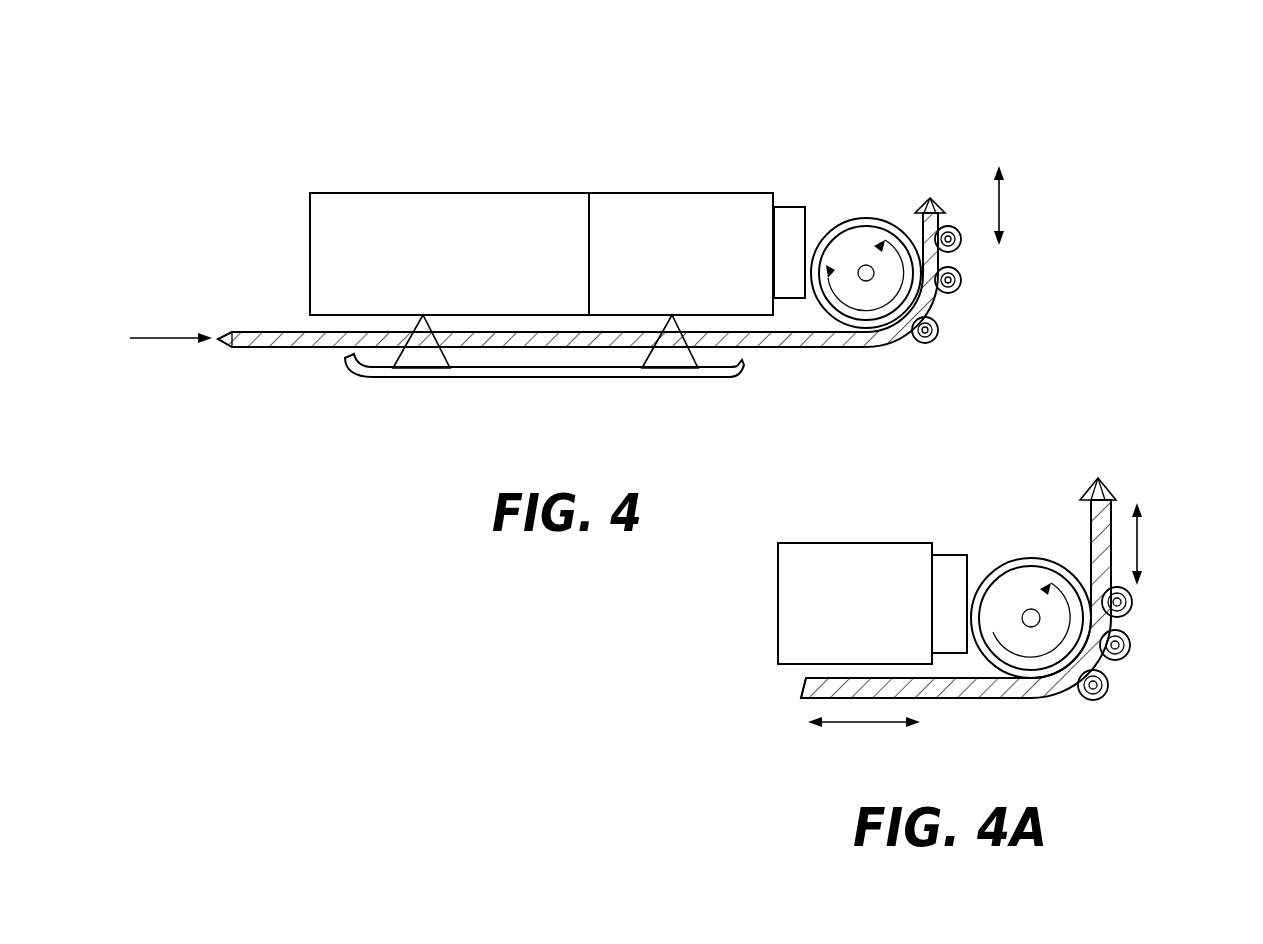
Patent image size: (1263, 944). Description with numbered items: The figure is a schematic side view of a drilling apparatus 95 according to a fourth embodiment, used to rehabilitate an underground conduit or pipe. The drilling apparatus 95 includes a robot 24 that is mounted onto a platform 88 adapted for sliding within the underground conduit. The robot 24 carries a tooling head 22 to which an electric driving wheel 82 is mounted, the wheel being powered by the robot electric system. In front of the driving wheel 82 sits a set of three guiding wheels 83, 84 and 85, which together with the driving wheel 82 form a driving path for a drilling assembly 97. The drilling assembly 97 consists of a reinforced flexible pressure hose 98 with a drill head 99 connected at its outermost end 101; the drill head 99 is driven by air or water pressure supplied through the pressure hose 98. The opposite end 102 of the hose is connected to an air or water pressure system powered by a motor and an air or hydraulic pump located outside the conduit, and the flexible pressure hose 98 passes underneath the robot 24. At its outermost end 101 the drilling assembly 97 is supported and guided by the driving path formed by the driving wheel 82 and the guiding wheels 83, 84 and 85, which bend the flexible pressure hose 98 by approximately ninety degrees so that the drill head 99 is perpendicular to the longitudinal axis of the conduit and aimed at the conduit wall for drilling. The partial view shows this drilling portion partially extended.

In FIG. 4, the tooling head 22 is at (790, 212).
In FIG. 4A, the tooling head 22 is at (955, 578).
In FIG. 4, the robot 24 is at (522, 205).
In FIG. 4A, the robot 24 is at (866, 568).
In FIG. 4, the electric driving wheel 82 is at (865, 218).
In FIG. 4A, the electric driving wheel 82 is at (1030, 557).
In FIG. 4, the guiding wheel 83 is at (962, 242).
In FIG. 4A, the guiding wheel 83 is at (1133, 608).
In FIG. 4, the guiding wheel 84 is at (962, 283).
In FIG. 4A, the guiding wheel 84 is at (1132, 648).
In FIG. 4, the guiding wheel 85 is at (938, 338).
In FIG. 4A, the guiding wheel 85 is at (1108, 692).
In FIG. 4, the platform 88 is at (540, 372).
In FIG. 4, the drilling apparatus 95 is at (818, 106).
In FIG. 4, the drilling assembly 97 is at (803, 350).
In FIG. 4A, the drilling assembly 97 is at (1010, 700).
In FIG. 4, the reinforced flexible pressure hose 98 is at (325, 347).
In FIG. 4A, the reinforced flexible pressure hose 98 is at (803, 688).
In FIG. 4, the drill head 99 is at (933, 200).
In FIG. 4A, the drill head 99 is at (1102, 480).
In FIG. 4, the outermost end 101 is at (917, 202).
In FIG. 4, the end 102 is at (216, 341).